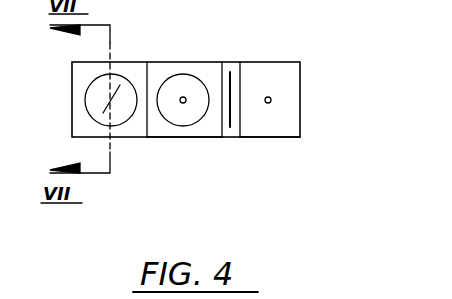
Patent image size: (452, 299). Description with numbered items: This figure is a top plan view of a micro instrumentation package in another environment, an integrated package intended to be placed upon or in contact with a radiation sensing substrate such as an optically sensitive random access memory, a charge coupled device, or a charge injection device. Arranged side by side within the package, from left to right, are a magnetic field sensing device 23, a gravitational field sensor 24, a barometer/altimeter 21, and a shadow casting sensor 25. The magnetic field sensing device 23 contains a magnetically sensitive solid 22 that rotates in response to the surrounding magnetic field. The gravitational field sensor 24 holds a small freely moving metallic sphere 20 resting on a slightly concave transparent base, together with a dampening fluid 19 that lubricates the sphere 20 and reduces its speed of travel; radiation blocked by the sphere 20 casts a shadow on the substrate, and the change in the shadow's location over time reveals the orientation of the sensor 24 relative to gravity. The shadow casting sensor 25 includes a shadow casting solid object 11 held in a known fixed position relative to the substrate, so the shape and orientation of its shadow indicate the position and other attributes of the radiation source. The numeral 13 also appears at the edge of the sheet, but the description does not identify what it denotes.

The shadow casting solid object 11 is at (268, 97).
The housing 13 is at (16, 6).
The dampening fluid 19 is at (95, 112).
The metallic sphere 20 is at (183, 97).
The barometer/altimeter 21 is at (226, 40).
The magnetically sensitive solid 22 is at (108, 103).
The magnetic field sensing device 23 is at (131, 157).
The gravitational field sensor 24 is at (181, 157).
The shadow casting sensor 25 is at (267, 160).